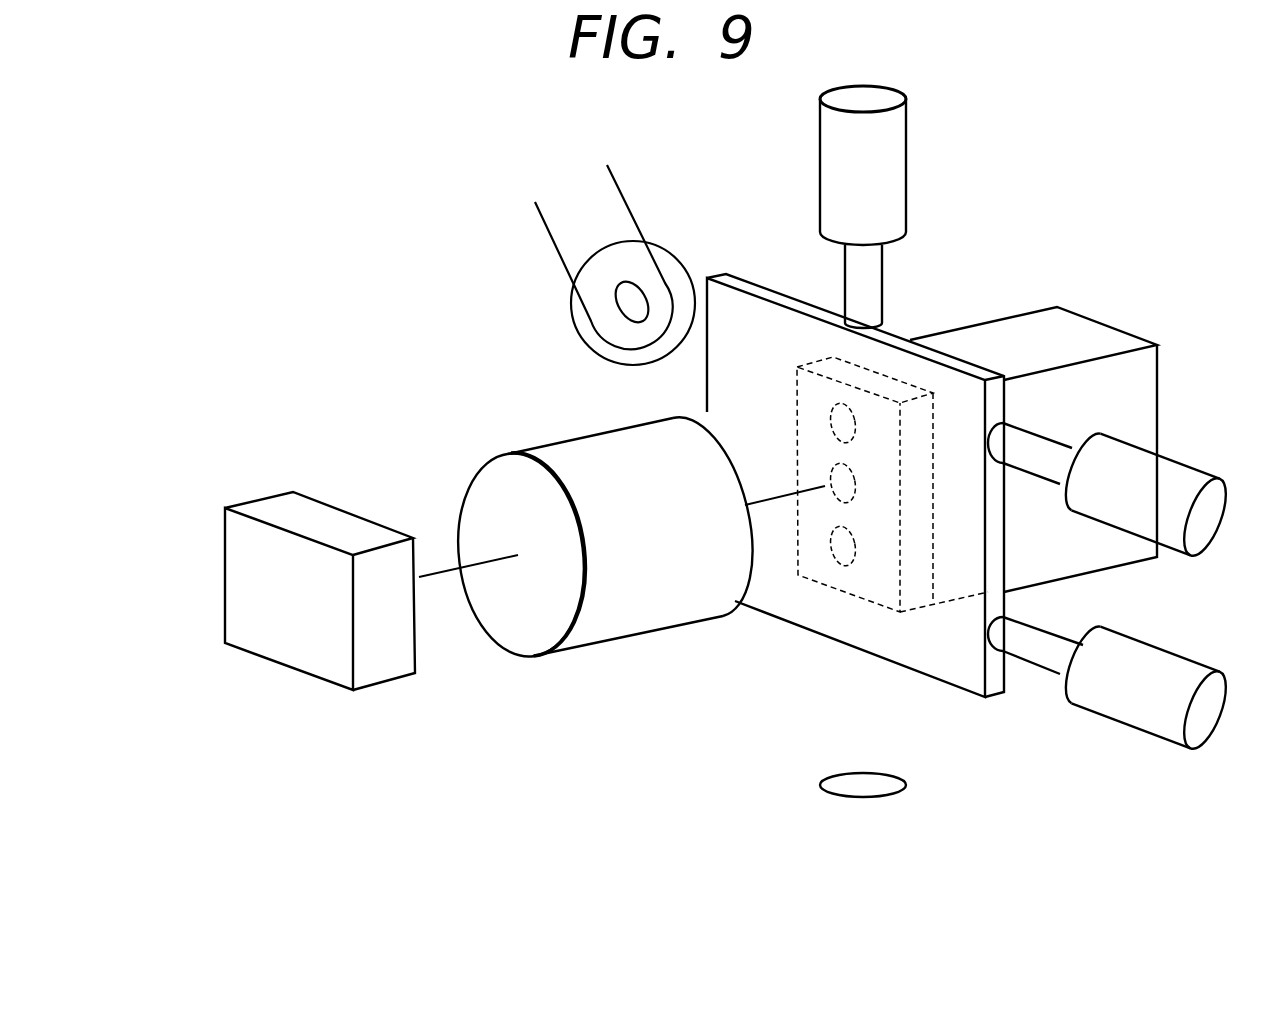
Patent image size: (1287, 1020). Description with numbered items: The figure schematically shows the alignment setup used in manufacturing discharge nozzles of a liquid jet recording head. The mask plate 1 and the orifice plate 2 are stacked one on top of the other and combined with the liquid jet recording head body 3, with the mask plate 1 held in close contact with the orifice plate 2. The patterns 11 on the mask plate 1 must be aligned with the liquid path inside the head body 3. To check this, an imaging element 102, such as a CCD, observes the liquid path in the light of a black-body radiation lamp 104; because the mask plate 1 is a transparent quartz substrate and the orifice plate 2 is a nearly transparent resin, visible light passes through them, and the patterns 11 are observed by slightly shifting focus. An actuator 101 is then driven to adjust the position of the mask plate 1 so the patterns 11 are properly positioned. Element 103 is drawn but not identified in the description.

The mask plate 1 is at (953, 663).
The orifice plate 2 is at (934, 412).
The liquid jet recording head body 3 is at (1110, 340).
The patterns 11 is at (838, 567).
The actuator 101 is at (893, 138).
The imaging element 102 is at (637, 617).
The rectangular block 103 is at (383, 663).
The black-body radiation lamp 104 is at (576, 318).